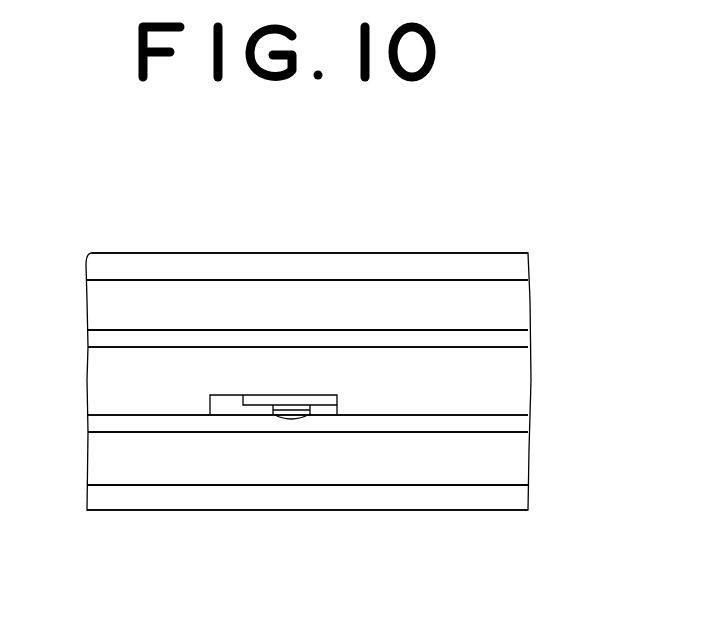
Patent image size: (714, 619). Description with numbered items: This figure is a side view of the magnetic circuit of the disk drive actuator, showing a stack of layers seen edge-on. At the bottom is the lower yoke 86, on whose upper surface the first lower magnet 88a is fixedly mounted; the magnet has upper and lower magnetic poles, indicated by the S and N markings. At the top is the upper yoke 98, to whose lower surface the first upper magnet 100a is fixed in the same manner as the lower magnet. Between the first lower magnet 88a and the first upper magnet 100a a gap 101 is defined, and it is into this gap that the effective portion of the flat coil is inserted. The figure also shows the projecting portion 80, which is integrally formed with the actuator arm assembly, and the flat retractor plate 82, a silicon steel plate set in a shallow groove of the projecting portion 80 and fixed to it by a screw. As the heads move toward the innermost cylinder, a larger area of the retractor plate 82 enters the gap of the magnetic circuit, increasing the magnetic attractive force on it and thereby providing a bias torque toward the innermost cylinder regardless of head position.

The projecting portion 80 is at (110, 382).
The upper yoke 98 is at (222, 253).
The first upper magnet 100a is at (393, 293).
The gap 101 is at (527, 338).
The retractor plate 82 is at (318, 395).
The first lower magnet 88a is at (420, 468).
The lower yoke 86 is at (337, 506).